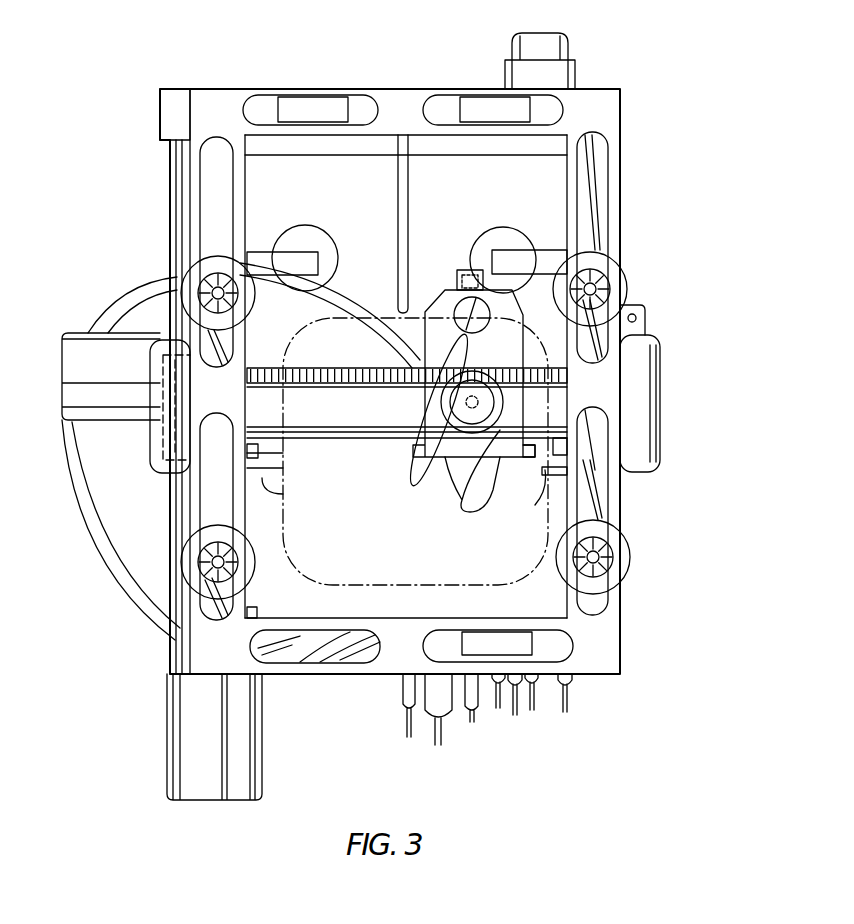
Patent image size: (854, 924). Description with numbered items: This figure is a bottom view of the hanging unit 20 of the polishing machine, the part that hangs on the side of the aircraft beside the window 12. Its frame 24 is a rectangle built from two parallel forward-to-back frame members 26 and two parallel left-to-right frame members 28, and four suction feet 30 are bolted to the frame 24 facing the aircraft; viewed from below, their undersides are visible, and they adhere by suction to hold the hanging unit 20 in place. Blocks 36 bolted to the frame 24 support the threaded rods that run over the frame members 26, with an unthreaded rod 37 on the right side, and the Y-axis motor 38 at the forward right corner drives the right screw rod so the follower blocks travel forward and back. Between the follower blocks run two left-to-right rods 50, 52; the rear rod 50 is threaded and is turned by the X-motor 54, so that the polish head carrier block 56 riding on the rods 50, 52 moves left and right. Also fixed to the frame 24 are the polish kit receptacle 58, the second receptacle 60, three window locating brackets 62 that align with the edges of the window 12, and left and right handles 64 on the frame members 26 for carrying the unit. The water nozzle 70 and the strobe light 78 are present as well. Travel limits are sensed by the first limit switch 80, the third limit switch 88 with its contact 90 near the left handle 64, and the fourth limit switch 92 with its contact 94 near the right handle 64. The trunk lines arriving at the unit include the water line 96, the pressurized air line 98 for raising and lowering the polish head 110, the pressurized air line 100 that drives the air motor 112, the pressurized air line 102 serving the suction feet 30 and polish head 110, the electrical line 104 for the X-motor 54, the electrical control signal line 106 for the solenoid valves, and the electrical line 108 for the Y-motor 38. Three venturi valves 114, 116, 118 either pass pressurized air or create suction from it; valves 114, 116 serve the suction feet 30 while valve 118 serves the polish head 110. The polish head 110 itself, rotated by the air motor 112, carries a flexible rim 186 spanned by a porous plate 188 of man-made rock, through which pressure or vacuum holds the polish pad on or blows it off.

The window 12 is at (340, 575).
The hanging unit 20 is at (656, 242).
The frame 24 is at (620, 76).
The forward-to-back frame members 26 is at (621, 157).
The left-to-right frame members 28 is at (400, 93).
The suction feet 30 is at (244, 292).
The blocks 36 is at (168, 100).
The unthreaded rod 37 is at (178, 203).
The Y-axis motor 38 is at (167, 737).
The rear left-to-right rod 50 is at (290, 374).
The left-to-right rod 52 is at (298, 432).
The X-motor 54 is at (72, 338).
The polish head carrier block 56 is at (525, 288).
The polish kit receptacle 58 is at (505, 228).
The second receptacle 60 is at (312, 228).
The window locating brackets 62 is at (410, 177).
The handles 64 is at (661, 414).
The water nozzle 70 is at (465, 265).
The strobe light 78 is at (545, 55).
The first limit switch 80 is at (258, 614).
The third limit switch 88 is at (526, 462).
The contact 90 is at (530, 428).
The fourth limit switch 92 is at (412, 462).
The contact 94 is at (262, 455).
The water line 96 is at (568, 707).
The pressurized air line 98 is at (532, 712).
The pressurized air line 100 is at (515, 716).
The pressurized air line 102 is at (498, 710).
The electrical line 104 is at (473, 722).
The electrical control signal line 106 is at (440, 744).
The electrical line 108 is at (407, 736).
The polish head 110 is at (438, 507).
The air motor 112 is at (455, 305).
The venturi valve 114 is at (310, 105).
The venturi valve 116 is at (478, 102).
The venturi valve 118 is at (493, 638).
The flexible rim 186 is at (464, 378).
The porous plate 188 is at (494, 402).